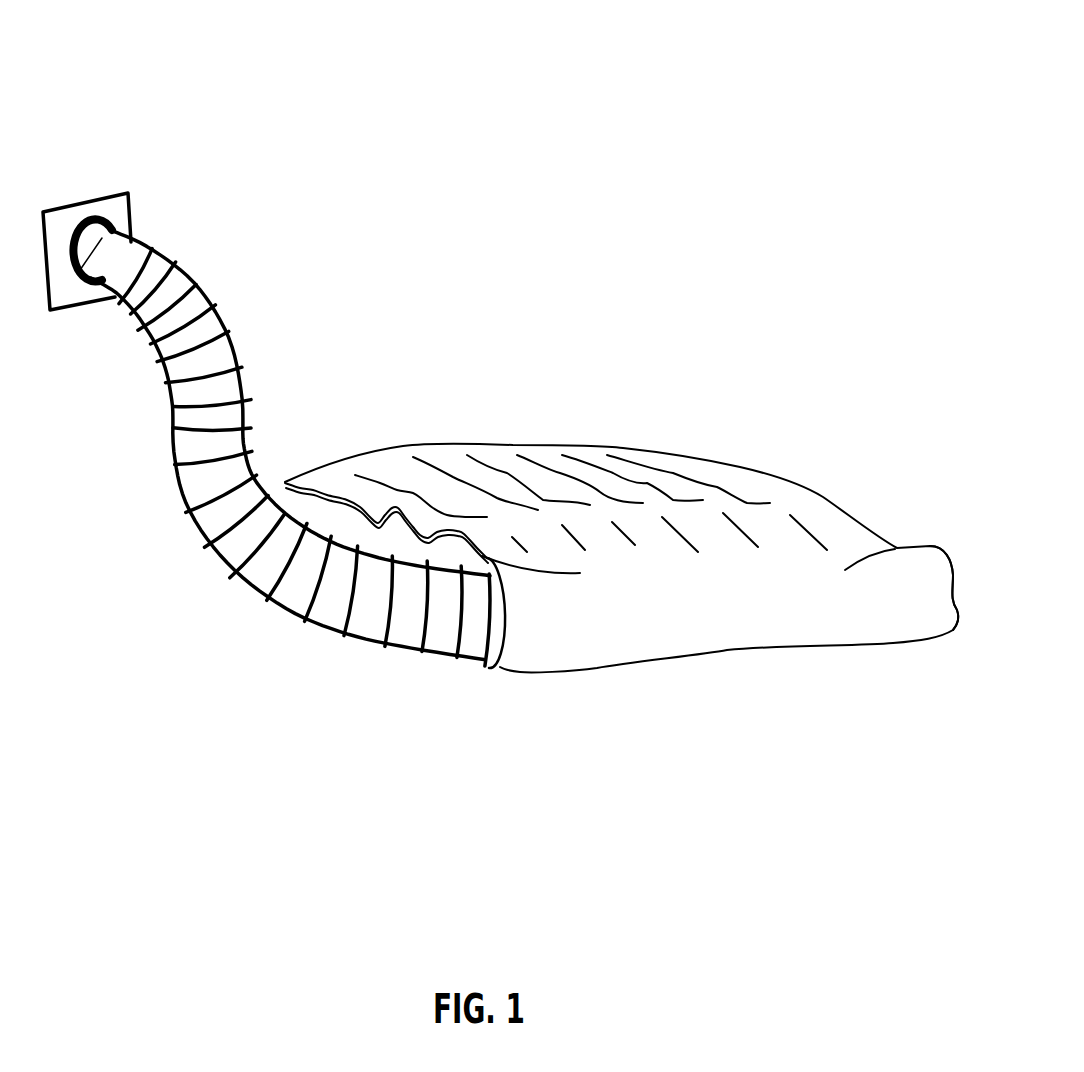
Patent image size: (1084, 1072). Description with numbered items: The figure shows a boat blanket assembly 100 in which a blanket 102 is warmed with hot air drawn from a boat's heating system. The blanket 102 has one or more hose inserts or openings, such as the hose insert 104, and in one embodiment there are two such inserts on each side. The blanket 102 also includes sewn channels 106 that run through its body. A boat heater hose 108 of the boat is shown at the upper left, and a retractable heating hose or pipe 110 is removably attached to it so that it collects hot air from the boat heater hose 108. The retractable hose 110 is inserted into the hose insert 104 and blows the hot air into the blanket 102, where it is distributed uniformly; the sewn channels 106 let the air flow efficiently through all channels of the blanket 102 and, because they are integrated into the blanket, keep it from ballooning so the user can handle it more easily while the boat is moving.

The boat blanket assembly 100 is at (755, 174).
The blanket 102 is at (838, 510).
The hose insert 104 is at (957, 623).
The sewn channels 106 is at (655, 430).
The boat heater hose 108 is at (123, 210).
The retractable heating hose 110 is at (228, 357).